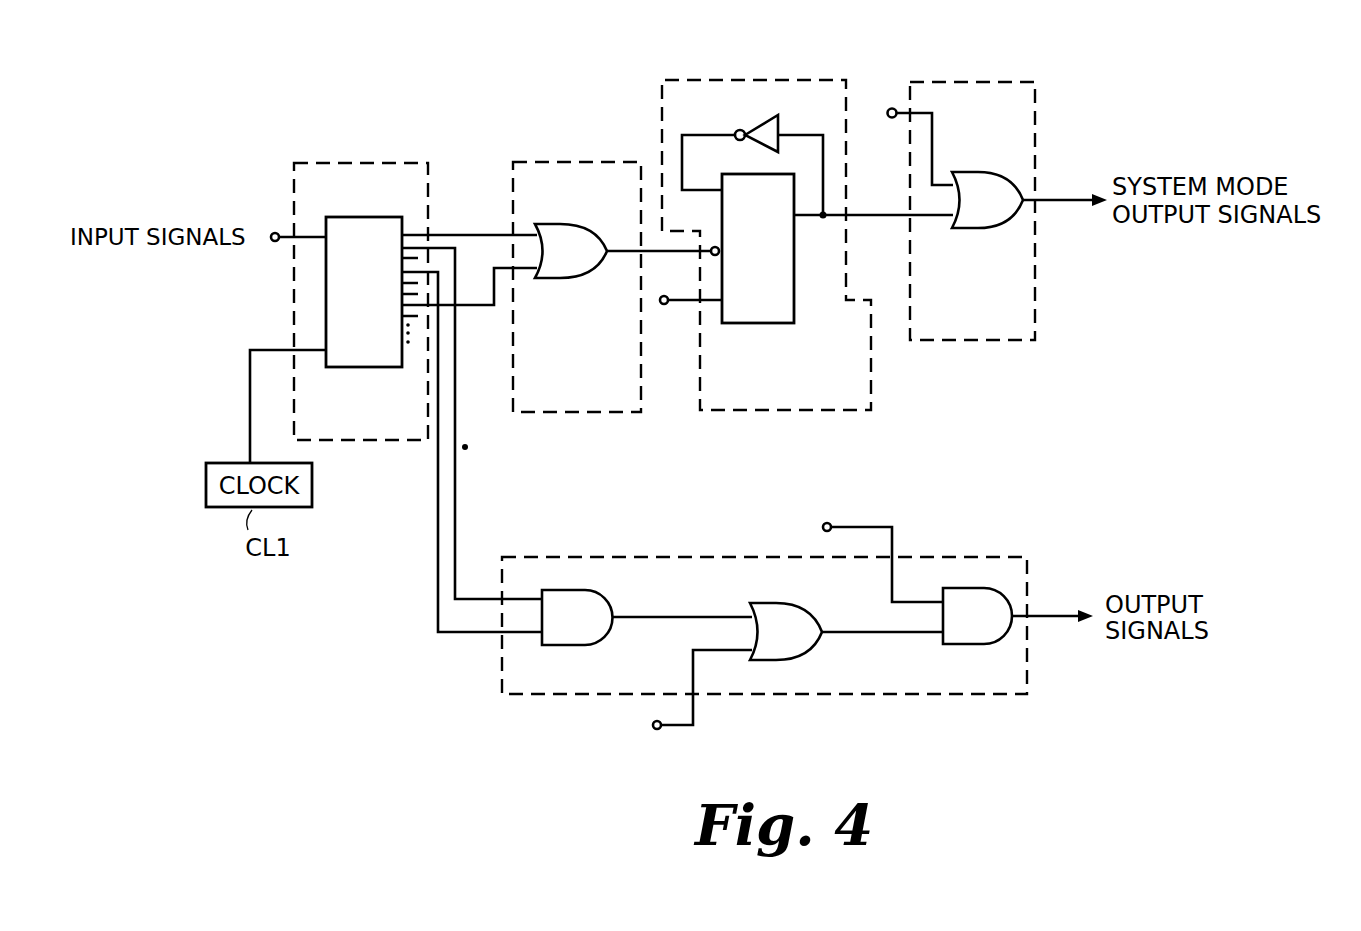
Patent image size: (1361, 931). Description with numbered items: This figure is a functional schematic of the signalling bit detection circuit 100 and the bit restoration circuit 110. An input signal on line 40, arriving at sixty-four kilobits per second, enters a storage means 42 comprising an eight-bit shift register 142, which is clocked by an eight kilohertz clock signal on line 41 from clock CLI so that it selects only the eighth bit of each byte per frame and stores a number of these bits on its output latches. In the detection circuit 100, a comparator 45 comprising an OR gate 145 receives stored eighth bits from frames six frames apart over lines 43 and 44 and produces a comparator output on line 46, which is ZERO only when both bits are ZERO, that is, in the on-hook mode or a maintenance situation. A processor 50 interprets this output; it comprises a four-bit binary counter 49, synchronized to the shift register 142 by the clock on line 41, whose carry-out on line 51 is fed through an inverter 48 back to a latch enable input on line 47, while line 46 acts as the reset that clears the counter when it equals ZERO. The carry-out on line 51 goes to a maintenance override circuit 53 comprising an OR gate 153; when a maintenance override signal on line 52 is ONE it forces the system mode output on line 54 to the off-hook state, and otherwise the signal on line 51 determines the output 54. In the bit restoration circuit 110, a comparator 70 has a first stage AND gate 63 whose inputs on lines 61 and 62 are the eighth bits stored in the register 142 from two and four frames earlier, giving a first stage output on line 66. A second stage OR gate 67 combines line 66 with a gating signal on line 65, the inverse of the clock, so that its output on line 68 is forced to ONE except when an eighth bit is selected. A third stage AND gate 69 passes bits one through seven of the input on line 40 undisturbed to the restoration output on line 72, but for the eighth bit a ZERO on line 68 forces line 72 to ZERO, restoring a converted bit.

The input signal line 40 is at (288, 232).
The clock signal line 41 is at (292, 348).
The storage means 42 is at (352, 162).
The eight-bit shift register 142 is at (352, 217).
The first output line 43 is at (490, 232).
The second output line 44 is at (469, 308).
The comparator 45 is at (555, 160).
The OR gate 145 is at (560, 278).
The comparator output line 46 is at (650, 253).
The latch enable input line 47 is at (702, 133).
The inverter 48 is at (780, 128).
The counter 49 is at (767, 325).
The processor 50 is at (765, 78).
The processor output signal line 51 is at (887, 220).
The maintenance override signal line 52 is at (891, 120).
The maintenance override circuit 53 is at (950, 80).
The OR gate 153 is at (975, 170).
The system mode output signal line 54 is at (1070, 203).
The signalling bit detection circuit 100 is at (1108, 84).
The first AND gate input line 61 is at (479, 598).
The second AND gate input line 62 is at (478, 635).
The AND gate 63 is at (600, 590).
The gating signal input line 65 is at (656, 735).
The first stage output line 66 is at (680, 615).
The OR gate 67 is at (782, 604).
The second stage output line 68 is at (871, 635).
The AND gate 69 is at (970, 645).
The comparator 70 is at (620, 556).
The bit restoration output line 72 is at (1058, 620).
The bit restoration circuit 110 is at (1041, 508).